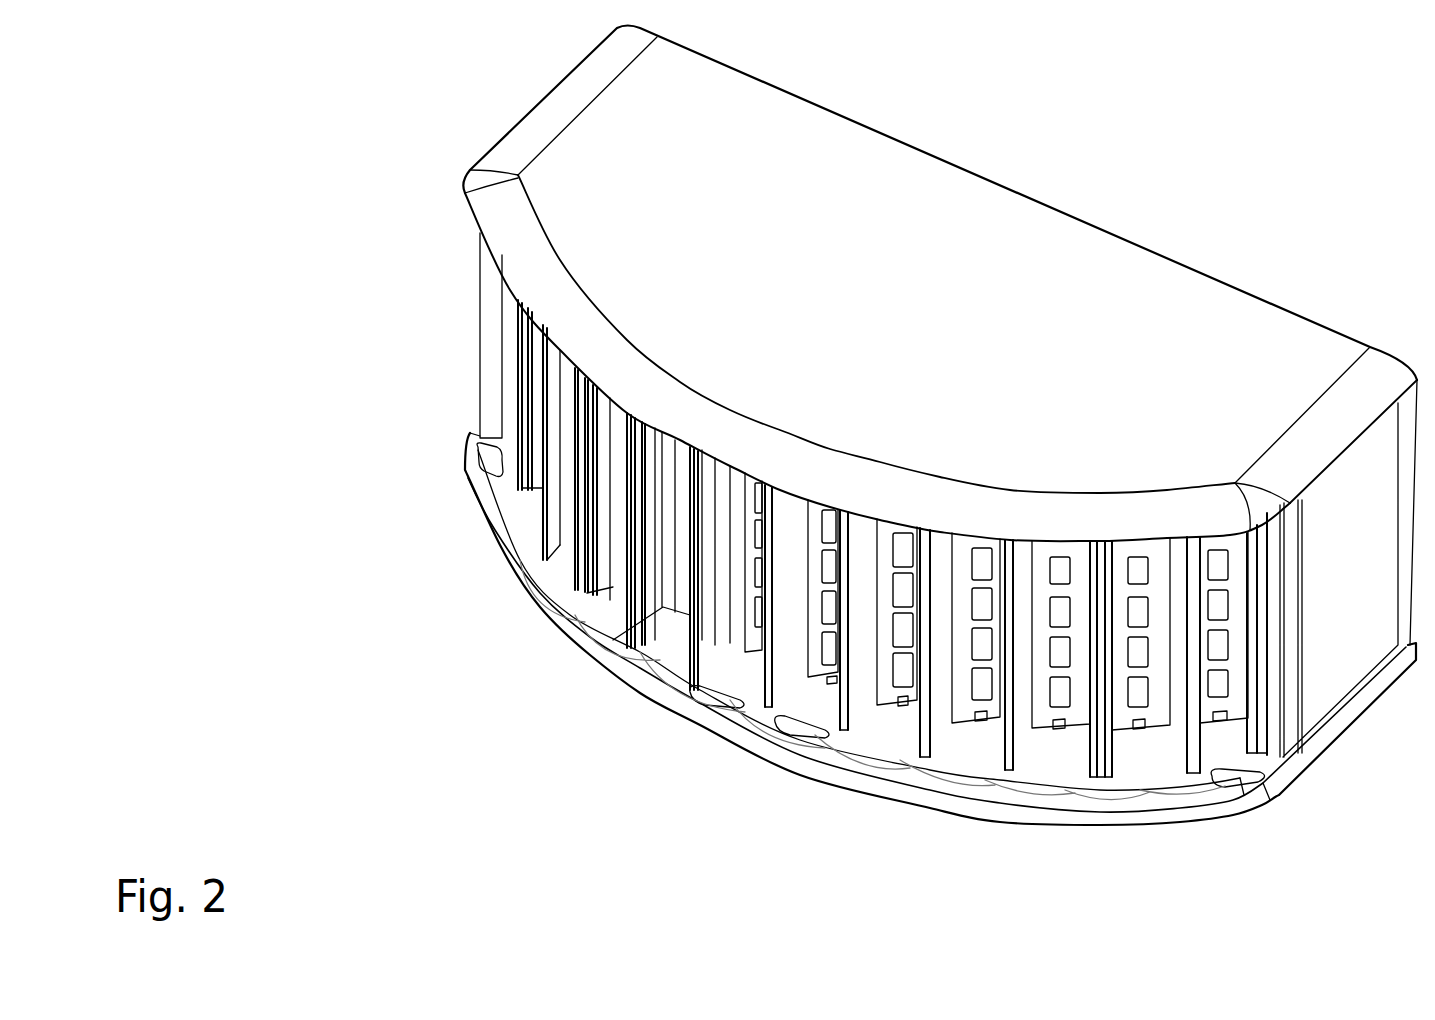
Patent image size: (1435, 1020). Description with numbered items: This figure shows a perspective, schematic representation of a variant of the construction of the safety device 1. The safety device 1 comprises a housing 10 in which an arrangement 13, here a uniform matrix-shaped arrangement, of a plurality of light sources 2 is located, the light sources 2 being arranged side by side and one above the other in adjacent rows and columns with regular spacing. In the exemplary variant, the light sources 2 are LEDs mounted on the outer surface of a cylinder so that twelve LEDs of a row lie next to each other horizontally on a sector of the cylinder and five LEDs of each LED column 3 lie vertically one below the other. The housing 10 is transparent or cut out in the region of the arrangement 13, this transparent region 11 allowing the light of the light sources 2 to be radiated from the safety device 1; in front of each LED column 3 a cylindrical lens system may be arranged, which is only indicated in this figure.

The safety device 1 is at (1113, 168).
The light sources 2 is at (980, 683).
The LED column 3 is at (730, 643).
The housing 10 is at (883, 315).
The transparent region 11 is at (1147, 798).
The arrangement 13 is at (1040, 720).